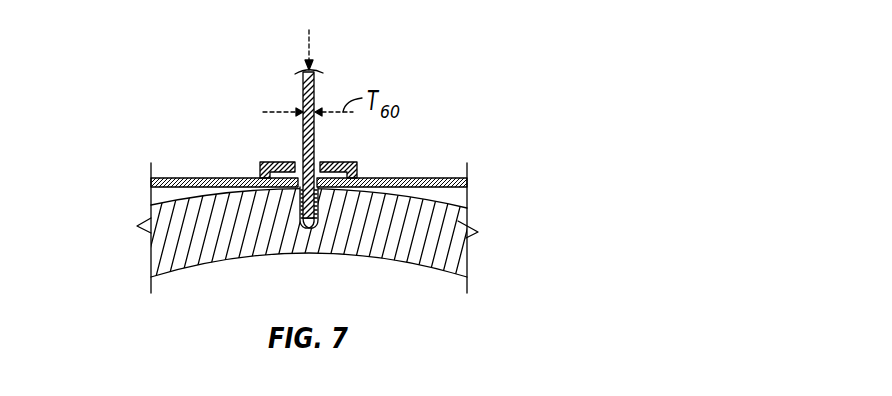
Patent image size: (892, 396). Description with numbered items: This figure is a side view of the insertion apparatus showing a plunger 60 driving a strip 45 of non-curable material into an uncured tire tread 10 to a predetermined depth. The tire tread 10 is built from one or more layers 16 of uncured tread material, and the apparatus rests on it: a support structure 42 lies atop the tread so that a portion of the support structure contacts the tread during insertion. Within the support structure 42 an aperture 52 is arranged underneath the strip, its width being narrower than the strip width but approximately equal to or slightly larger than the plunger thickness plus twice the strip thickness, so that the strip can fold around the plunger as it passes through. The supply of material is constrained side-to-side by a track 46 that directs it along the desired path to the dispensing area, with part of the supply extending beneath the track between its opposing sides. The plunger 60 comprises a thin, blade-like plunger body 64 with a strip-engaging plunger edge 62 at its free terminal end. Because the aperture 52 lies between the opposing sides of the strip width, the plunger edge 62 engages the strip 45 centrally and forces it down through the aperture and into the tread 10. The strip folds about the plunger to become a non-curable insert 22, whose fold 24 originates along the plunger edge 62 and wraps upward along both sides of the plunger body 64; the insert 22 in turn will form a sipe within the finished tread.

The tire tread 10 is at (329, 228).
The layer of uncured tread material 16 is at (455, 255).
The non-curable insert 22 is at (309, 174).
The strip of non-curable material 45 is at (294, 222).
The fold 24 is at (304, 238).
The support structure 42 is at (432, 178).
The aperture 52 is at (299, 208).
The track 46 is at (342, 160).
The plunger 60 is at (315, 81).
The plunger body 64 is at (303, 84).
The plunger edge 62 is at (312, 230).